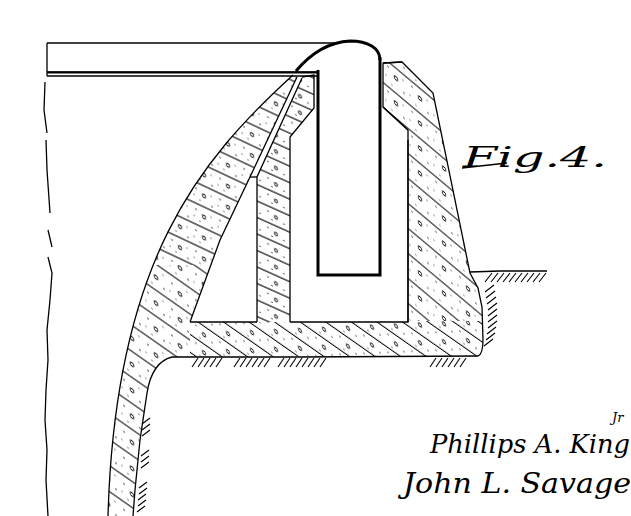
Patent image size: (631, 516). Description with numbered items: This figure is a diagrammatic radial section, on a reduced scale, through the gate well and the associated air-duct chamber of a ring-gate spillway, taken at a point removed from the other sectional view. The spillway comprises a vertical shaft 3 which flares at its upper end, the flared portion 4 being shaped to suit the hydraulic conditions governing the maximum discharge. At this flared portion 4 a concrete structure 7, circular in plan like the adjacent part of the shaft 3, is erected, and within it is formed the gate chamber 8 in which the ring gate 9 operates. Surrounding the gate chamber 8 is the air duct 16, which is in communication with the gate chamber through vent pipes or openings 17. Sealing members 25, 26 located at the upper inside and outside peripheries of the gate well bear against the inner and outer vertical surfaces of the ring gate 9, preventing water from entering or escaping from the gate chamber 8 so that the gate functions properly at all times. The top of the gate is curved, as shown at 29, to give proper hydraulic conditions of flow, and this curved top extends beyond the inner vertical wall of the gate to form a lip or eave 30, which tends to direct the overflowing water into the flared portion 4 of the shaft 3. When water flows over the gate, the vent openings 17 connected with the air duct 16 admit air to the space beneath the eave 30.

The vertical shaft 3 is at (100, 483).
The flared portion 4 is at (72, 279).
The concrete structure 7 is at (452, 214).
The gate chamber 8 is at (395, 246).
The ring gate 9 is at (380, 137).
The air duct 16 is at (210, 297).
The vent pipes or openings 17 is at (280, 135).
The sealing member 25 is at (300, 80).
The sealing member 26 is at (386, 63).
The curved top portion 29 is at (350, 41).
The lip or eave 30 is at (300, 68).